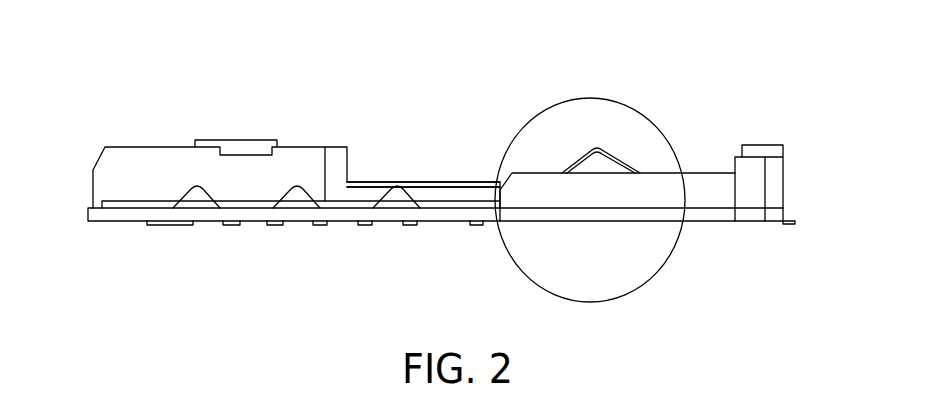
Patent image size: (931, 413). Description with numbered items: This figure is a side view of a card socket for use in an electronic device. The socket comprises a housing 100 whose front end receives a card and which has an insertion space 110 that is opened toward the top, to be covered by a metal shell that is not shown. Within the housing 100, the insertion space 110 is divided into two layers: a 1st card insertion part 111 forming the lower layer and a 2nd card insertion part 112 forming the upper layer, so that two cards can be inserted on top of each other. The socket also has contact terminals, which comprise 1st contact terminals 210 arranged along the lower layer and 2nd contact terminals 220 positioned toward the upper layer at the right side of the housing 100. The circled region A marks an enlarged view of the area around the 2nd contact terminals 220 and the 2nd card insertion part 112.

The housing 100 is at (138, 142).
The insertion space 110 is at (497, 65).
The 1st card insertion part 111 is at (459, 191).
The 2nd card insertion part 112 is at (552, 165).
The 1st contact terminals 210 is at (192, 202).
The 2nd contact terminals 220 is at (623, 157).
The enlarged region A is at (612, 98).